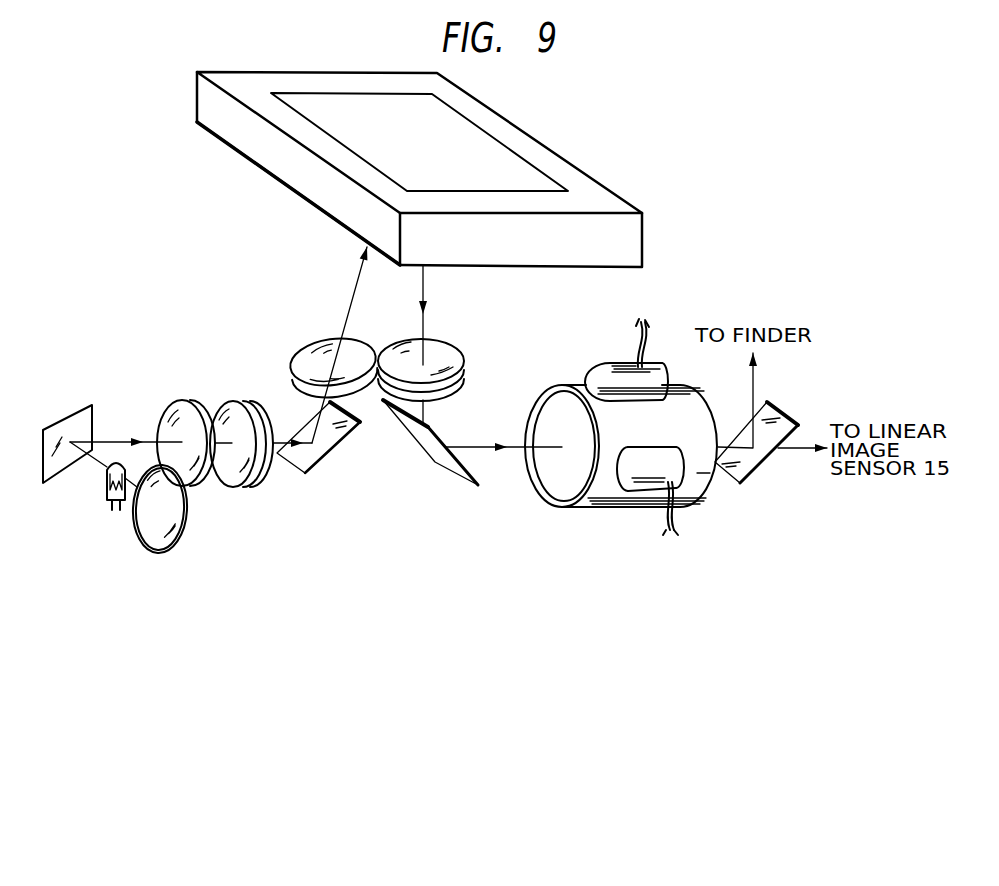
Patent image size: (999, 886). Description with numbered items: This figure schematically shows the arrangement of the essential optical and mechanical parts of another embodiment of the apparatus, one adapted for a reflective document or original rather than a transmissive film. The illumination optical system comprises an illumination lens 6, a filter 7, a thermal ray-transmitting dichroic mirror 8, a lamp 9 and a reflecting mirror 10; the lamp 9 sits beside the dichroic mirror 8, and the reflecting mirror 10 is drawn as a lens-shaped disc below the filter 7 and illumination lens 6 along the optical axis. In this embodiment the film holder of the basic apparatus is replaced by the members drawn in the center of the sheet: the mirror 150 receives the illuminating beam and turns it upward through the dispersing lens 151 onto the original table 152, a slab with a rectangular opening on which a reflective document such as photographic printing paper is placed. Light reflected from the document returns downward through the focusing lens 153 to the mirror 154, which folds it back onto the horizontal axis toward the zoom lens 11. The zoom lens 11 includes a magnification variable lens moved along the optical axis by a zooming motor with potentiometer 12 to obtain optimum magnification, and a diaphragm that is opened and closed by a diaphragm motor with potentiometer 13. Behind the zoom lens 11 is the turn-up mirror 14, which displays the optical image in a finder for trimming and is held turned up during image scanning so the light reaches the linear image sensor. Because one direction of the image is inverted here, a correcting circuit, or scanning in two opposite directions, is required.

The illumination lens 6 is at (232, 402).
The filter 7 is at (183, 400).
The thermal ray-transmitting dichroic mirror 8 is at (68, 412).
The lamp 9 is at (103, 490).
The reflecting mirror 10 is at (137, 540).
The zoom lens 11 is at (592, 500).
The potentiometer 12 is at (623, 363).
The diaphragm motor with potentiometer 13 is at (648, 482).
The turn-up mirror 14 is at (748, 463).
The mirror 150 is at (310, 458).
The dispersing lens 151 is at (310, 347).
The original table 152 is at (535, 177).
The focusing lens 153 is at (452, 357).
The mirror 154 is at (443, 460).